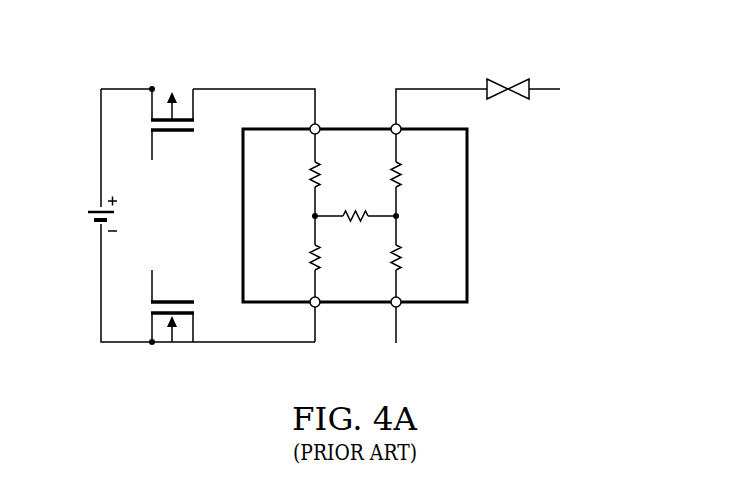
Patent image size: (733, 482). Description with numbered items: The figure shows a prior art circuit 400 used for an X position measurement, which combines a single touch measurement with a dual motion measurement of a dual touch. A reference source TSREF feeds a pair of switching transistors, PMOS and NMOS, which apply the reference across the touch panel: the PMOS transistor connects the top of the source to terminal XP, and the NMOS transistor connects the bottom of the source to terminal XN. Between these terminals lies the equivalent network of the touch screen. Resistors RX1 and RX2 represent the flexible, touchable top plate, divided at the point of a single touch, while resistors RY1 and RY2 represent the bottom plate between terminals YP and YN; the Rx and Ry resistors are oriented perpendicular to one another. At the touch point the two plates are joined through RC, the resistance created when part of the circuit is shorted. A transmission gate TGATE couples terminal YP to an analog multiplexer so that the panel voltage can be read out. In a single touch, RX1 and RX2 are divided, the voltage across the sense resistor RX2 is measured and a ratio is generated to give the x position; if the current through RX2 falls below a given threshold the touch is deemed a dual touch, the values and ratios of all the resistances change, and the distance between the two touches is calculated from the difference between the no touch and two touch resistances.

The circuit 400 is at (341, 51).
The PMOS transistor PMOS is at (171, 111).
The NMOS transistor NMOS is at (171, 320).
The touch screen reference voltage source TSREF is at (71, 214).
The transmission gate TGATE is at (508, 76).
The XP terminal XP is at (327, 117).
The YP terminal YP is at (408, 117).
The XN terminal XN is at (327, 314).
The YN terminal YN is at (409, 314).
The resistor Rx1 RX1 is at (296, 173).
The sense resistor Rx2 RX2 is at (296, 257).
The resistor Ry1 RY1 is at (415, 173).
The resistor Ry2 RY2 is at (415, 257).
The resistance Rc RC is at (355, 202).